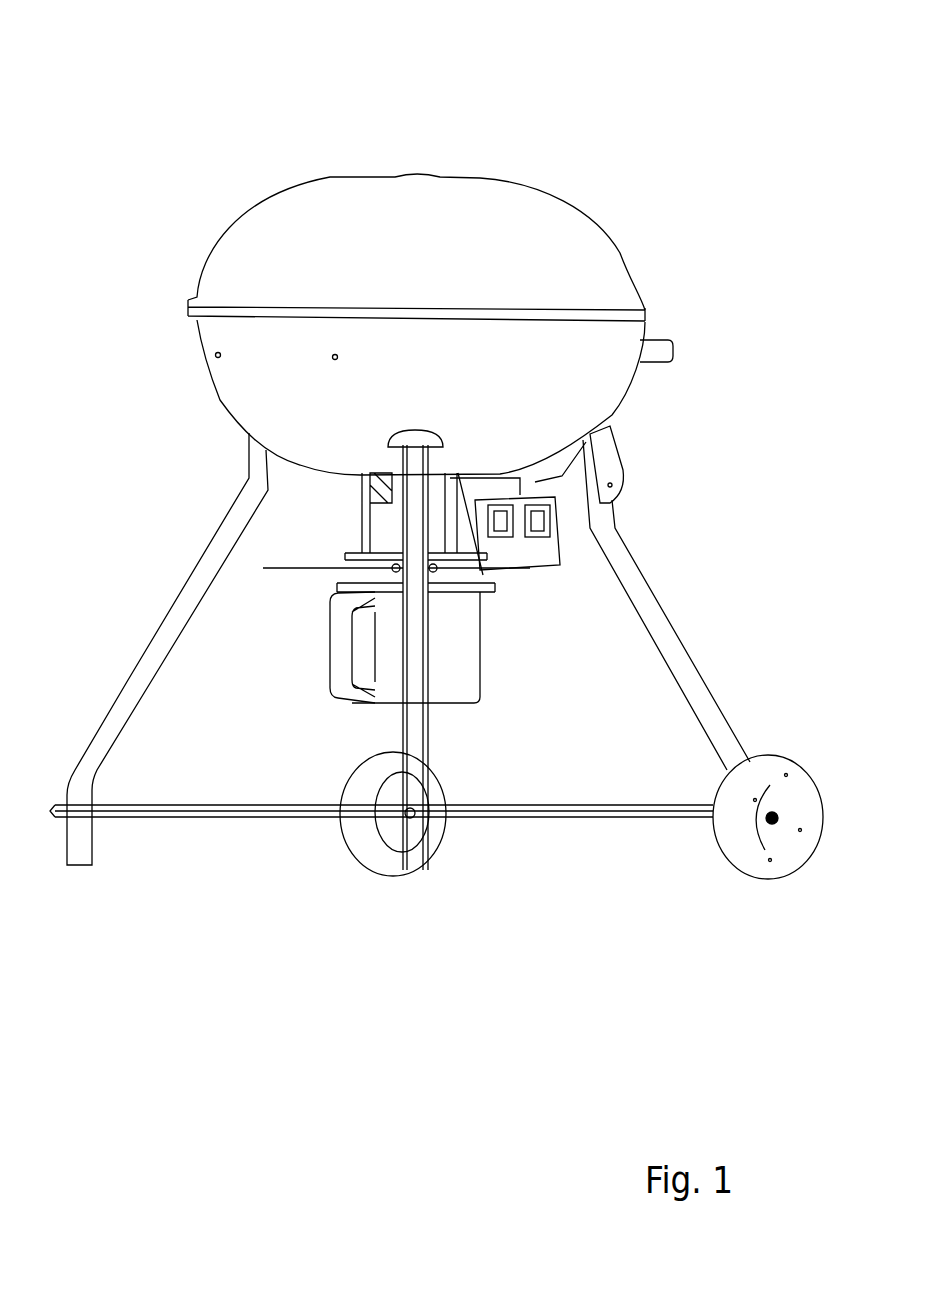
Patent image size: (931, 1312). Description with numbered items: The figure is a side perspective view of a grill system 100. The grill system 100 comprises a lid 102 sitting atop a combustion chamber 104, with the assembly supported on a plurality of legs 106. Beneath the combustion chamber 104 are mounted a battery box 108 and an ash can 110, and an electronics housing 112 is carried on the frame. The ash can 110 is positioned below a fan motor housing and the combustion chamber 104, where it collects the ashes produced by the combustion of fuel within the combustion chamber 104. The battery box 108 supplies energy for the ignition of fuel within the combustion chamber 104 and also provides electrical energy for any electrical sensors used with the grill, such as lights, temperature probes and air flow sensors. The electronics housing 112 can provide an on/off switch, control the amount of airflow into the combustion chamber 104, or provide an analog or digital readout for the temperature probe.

The grill system 100 is at (426, 93).
The lid 102 is at (333, 177).
The combustion chamber 104 is at (217, 395).
The legs 106 is at (115, 710).
The battery box 108 is at (502, 562).
The ash can 110 is at (330, 630).
The electronics housing 112 is at (610, 473).